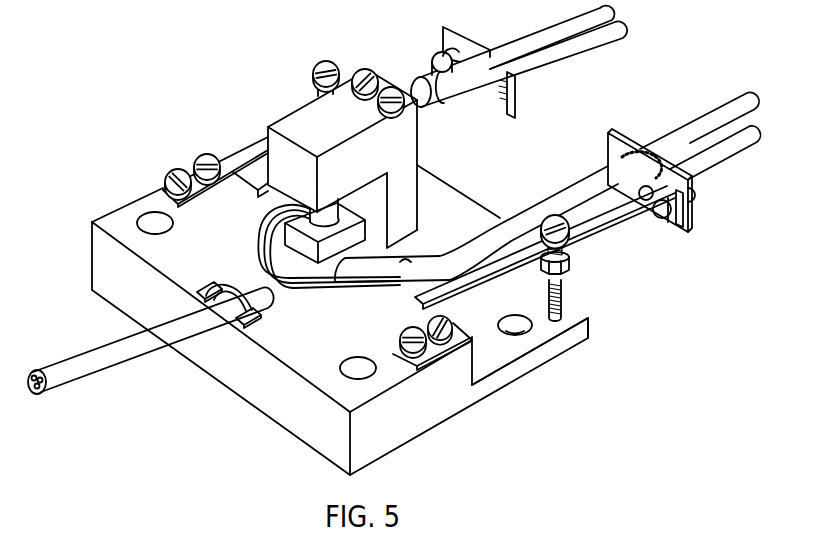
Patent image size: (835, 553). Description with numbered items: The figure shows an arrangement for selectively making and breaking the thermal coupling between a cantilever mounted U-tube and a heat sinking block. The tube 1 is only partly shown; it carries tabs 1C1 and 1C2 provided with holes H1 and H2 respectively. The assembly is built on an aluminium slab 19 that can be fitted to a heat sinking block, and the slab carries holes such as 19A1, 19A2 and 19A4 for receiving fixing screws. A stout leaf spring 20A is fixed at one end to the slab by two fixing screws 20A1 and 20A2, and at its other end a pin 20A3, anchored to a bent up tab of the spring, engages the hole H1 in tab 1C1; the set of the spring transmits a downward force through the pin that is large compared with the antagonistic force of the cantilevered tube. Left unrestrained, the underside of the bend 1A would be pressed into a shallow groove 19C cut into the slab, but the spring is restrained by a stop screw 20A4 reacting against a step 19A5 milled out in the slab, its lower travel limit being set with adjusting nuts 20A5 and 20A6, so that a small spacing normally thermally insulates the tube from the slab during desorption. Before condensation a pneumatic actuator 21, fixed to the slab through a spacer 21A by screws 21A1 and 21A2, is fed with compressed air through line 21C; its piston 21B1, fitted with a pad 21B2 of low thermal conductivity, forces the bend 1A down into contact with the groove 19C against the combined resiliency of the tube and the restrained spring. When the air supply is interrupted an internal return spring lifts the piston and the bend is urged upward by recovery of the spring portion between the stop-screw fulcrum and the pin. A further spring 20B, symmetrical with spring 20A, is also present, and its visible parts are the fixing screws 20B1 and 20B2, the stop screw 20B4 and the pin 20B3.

The tube 1 is at (694, 104).
The bend 1A is at (426, 262).
The tab 1C1 is at (516, 114).
The tab 1C2 is at (632, 115).
The hole H1 is at (690, 223).
The hole H2 is at (462, 53).
The aluminium slab 19 is at (413, 428).
The hole 19A1 is at (350, 378).
The hole 19A2 is at (140, 219).
The hole 19A4 is at (536, 326).
The step 19A5 is at (500, 357).
The shallow groove 19C is at (410, 288).
The leaf spring 20A is at (640, 235).
The fixing screw 20A1 is at (416, 327).
The fixing screw 20A2 is at (462, 340).
The pin 20A3 is at (702, 199).
The stop screw 20A4 is at (562, 218).
The adjusting nut 20A5 is at (567, 264).
The adjusting nut 20A6 is at (568, 286).
The spring 20B is at (256, 147).
The fixing screw 20B1 is at (175, 170).
The fixing screw 20B2 is at (207, 153).
The pin 20B3 is at (450, 50).
The stop screw 20B4 is at (313, 64).
The pneumatic actuator 21 is at (264, 100).
The spacer 21A is at (410, 198).
The screw 21A1 is at (396, 88).
The screw 21A2 is at (363, 71).
The piston 21B1 is at (290, 227).
The pad 21B2 is at (310, 248).
The line 21C is at (574, 43).